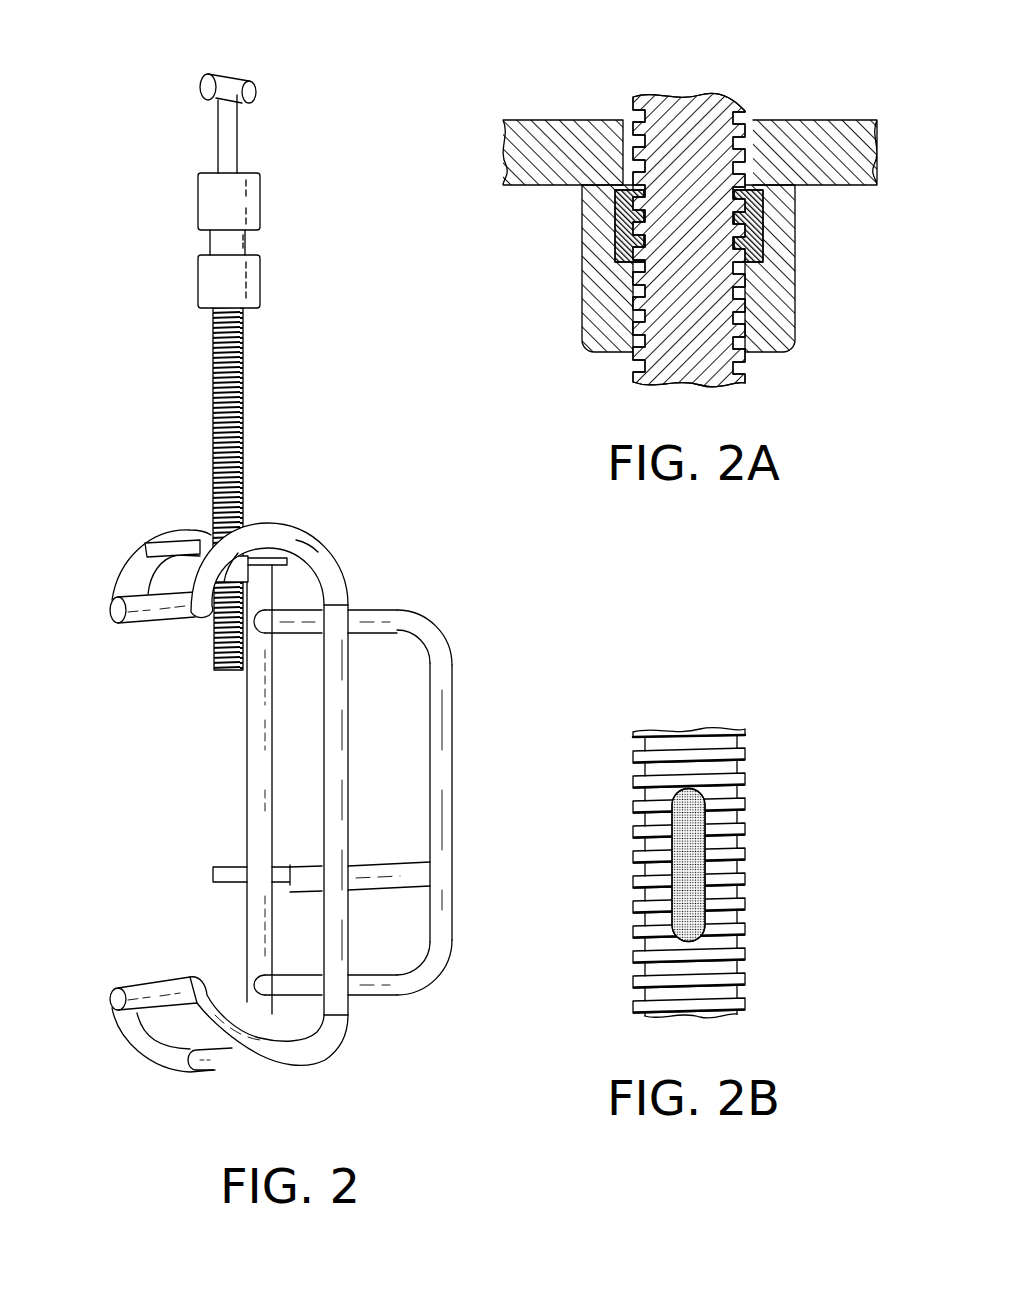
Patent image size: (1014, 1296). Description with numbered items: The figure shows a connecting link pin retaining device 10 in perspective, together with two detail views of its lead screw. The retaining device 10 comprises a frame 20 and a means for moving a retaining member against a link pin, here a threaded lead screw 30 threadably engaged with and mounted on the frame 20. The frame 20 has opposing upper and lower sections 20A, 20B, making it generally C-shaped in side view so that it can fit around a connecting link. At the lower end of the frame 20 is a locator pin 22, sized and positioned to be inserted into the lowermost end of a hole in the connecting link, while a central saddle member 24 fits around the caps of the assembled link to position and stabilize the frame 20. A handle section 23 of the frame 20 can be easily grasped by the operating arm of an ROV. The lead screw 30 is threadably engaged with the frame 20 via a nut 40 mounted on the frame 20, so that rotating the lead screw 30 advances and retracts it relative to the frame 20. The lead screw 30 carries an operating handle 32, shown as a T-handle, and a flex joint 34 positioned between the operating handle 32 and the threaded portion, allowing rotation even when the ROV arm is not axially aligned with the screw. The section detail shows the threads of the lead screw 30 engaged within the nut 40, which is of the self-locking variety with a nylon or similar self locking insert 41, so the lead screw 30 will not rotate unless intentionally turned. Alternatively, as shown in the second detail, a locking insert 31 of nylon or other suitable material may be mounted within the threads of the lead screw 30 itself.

In FIG. 2, the retaining device 10 is at (138, 517).
In FIG. 2, the frame 20 is at (339, 582).
In FIG. 2, the upper section 20A is at (92, 527).
In FIG. 2, the lower section 20B is at (93, 977).
In FIG. 2, the locator pin 22 is at (212, 1071).
In FIG. 2, the handle section 23 is at (452, 748).
In FIG. 2, the central saddle member 24 is at (233, 876).
In FIG. 2, the lead screw 30 is at (245, 383).
In FIG. 2A, the lead screw 30 is at (717, 103).
In FIG. 2B, the lead screw 30 is at (732, 950).
In FIG. 2B, the insert 31 is at (697, 842).
In FIG. 2, the operating handle 32 is at (238, 77).
In FIG. 2, the flex joint 34 is at (247, 243).
In FIG. 2, the nut 40 is at (250, 557).
In FIG. 2A, the nut 40 is at (777, 290).
In FIG. 2A, the self locking insert 41 is at (613, 227).